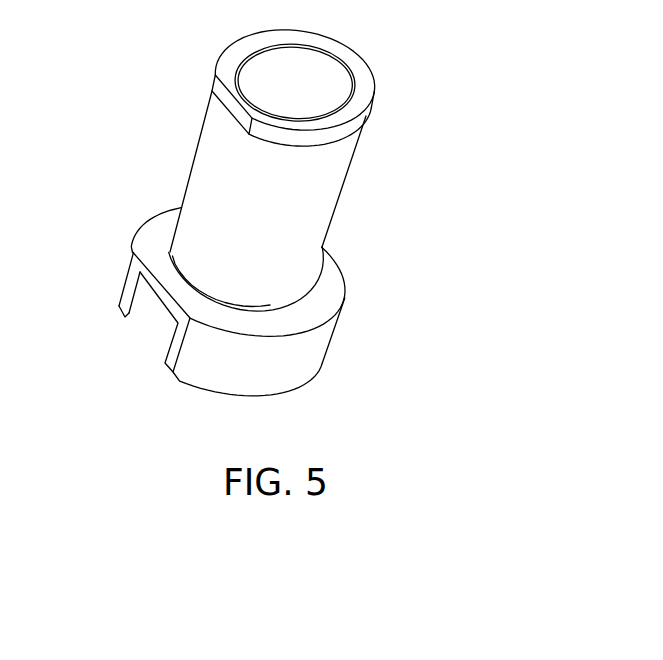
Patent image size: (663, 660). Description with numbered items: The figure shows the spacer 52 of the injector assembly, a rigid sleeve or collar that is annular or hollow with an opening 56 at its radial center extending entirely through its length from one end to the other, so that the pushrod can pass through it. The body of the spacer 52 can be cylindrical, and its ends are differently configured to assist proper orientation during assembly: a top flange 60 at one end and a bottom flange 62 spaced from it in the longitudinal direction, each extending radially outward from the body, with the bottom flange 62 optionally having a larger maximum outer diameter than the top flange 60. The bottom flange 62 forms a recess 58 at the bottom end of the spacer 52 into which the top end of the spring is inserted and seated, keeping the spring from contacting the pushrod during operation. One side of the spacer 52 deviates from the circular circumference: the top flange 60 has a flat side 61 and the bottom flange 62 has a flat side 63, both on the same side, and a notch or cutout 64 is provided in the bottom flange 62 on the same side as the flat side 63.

The spacer 52 is at (432, 185).
The opening 56 is at (297, 85).
The recess 58 is at (165, 312).
The top flange 60 is at (377, 100).
The flat side 61 is at (212, 88).
The bottom flange 62 is at (315, 348).
The flat side 63 is at (137, 263).
The notch or cutout 64 is at (123, 298).